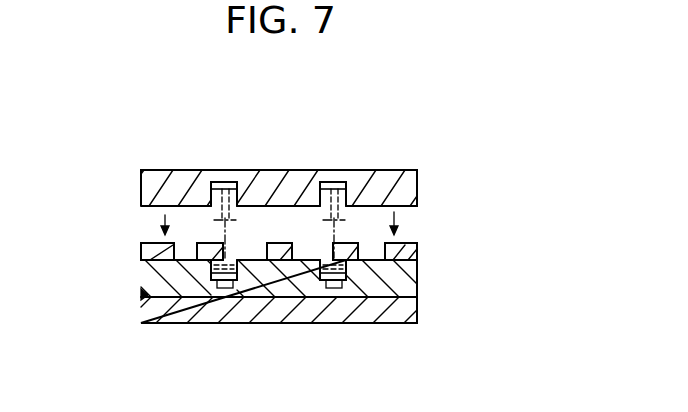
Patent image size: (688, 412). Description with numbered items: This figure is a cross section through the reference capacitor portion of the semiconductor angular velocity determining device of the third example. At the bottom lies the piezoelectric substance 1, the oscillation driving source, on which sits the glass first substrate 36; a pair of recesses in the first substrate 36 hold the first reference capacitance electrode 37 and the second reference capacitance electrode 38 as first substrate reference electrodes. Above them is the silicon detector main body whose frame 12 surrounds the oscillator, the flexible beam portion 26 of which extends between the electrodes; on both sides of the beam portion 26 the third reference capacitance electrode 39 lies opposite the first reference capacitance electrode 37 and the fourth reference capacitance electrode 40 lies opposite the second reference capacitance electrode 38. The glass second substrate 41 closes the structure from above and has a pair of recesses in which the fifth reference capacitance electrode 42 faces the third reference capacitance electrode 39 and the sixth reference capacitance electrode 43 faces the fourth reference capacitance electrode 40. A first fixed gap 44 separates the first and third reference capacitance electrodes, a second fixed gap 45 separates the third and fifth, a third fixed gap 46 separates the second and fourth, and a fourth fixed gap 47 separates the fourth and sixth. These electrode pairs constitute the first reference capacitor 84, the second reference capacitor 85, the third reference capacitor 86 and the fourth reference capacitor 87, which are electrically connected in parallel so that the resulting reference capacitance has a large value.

The piezoelectric substance 1 is at (417, 318).
The frame 12 is at (417, 252).
The beam portion 26 is at (320, 260).
The first substrate 36 is at (417, 285).
The first reference capacitance electrode 37 is at (337, 285).
The second reference capacitance electrode 38 is at (225, 290).
The third reference capacitance electrode 39 is at (358, 242).
The fourth reference capacitance electrode 40 is at (200, 252).
The second substrate 41 is at (417, 173).
The fifth reference capacitance electrode 42 is at (346, 190).
The sixth reference capacitance electrode 43 is at (212, 172).
The first fixed gap 44 is at (320, 268).
The second fixed gap 45 is at (355, 232).
The third fixed gap 46 is at (212, 268).
The fourth fixed gap 47 is at (198, 227).
The first reference capacitor 84 is at (344, 286).
The second reference capacitor 85 is at (230, 288).
The third reference capacitor 86 is at (327, 182).
The fourth reference capacitor 87 is at (231, 183).